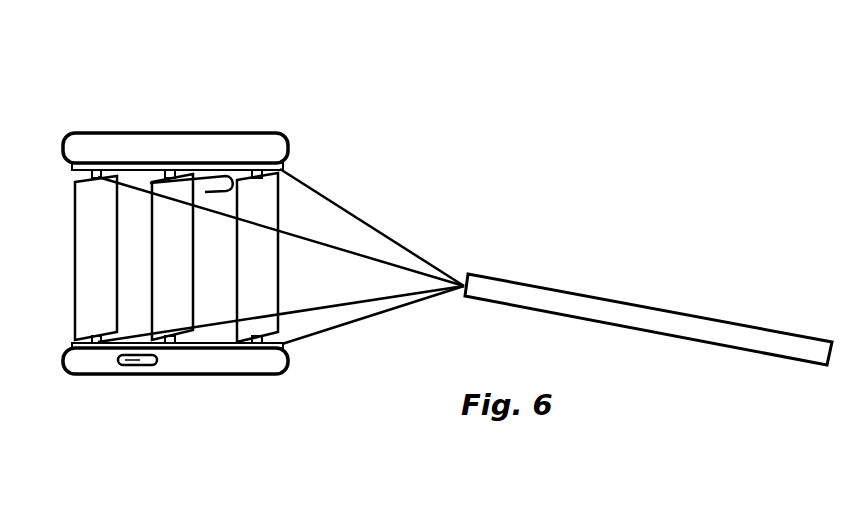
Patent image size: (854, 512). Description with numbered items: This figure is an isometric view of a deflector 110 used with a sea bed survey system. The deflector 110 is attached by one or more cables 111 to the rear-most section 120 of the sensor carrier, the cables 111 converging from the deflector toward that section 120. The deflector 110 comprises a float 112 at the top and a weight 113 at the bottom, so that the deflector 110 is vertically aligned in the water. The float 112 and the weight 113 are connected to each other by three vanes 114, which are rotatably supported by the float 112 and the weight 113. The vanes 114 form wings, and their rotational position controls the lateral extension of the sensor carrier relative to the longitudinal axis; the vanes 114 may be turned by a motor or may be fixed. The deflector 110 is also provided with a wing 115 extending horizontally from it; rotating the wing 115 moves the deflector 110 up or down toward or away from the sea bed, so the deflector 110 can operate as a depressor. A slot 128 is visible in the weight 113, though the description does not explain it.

The deflector 110 is at (383, 84).
The cables 111 is at (388, 235).
The float 112 is at (88, 150).
The weight 113 is at (246, 368).
The vanes 114 is at (270, 200).
The wing 115 is at (228, 181).
The section 120 is at (672, 310).
The slot 128 is at (114, 371).